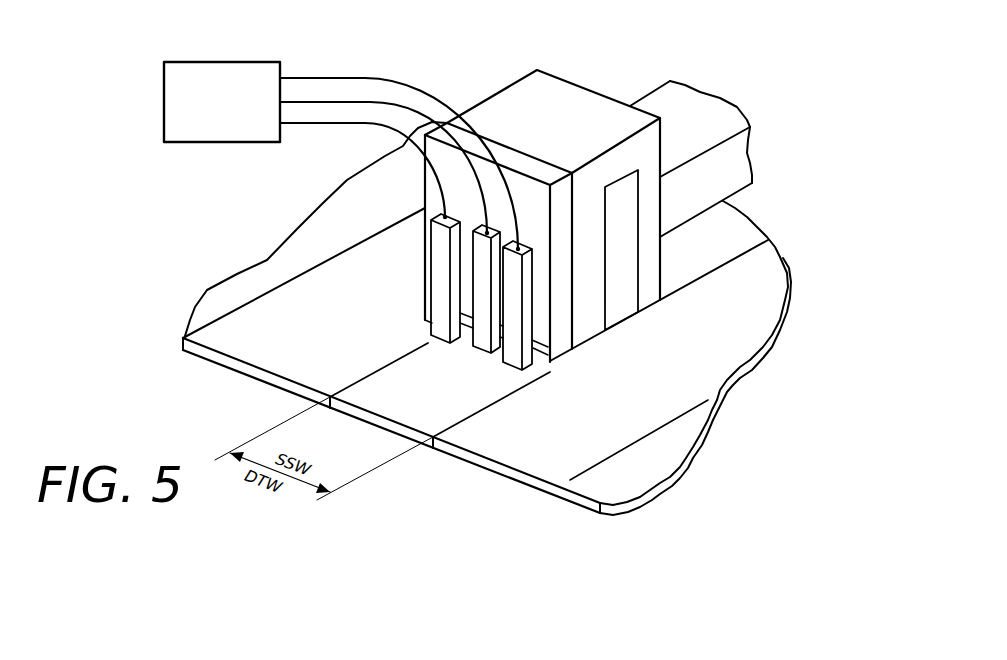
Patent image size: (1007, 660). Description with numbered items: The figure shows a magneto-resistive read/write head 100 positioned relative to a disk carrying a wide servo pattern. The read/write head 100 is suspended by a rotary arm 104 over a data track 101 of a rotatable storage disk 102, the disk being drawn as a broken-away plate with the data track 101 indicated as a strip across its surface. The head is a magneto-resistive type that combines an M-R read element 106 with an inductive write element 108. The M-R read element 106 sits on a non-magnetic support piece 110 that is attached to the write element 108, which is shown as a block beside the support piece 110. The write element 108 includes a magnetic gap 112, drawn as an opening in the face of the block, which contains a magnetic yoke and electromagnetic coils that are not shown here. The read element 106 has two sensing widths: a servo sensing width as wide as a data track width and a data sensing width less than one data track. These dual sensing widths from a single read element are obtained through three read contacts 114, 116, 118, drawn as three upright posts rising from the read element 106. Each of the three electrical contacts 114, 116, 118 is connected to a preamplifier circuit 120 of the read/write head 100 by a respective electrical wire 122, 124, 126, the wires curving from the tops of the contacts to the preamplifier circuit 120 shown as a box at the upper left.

The read/write head 100 is at (658, 50).
The data track 101 is at (382, 393).
The rotatable storage disk 102 is at (277, 358).
The rotary arm 104 is at (723, 108).
The M-R read element 106 is at (468, 333).
The inductive write element 108 is at (525, 82).
The non-magnetic support piece 110 is at (560, 360).
The magnetic gap 112 is at (623, 312).
The read contact 114 is at (440, 305).
The read contact 116 is at (512, 358).
The read contact 118 is at (482, 343).
The preamplifier circuit 120 is at (220, 60).
The electrical wire 122 is at (325, 127).
The electrical wire 124 is at (305, 77).
The electrical wire 126 is at (370, 100).